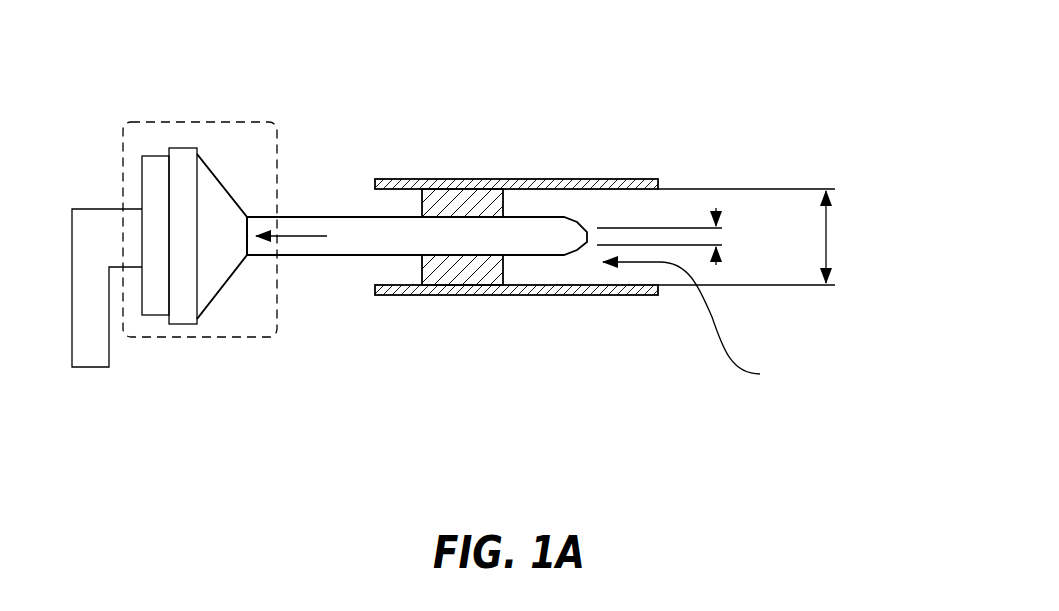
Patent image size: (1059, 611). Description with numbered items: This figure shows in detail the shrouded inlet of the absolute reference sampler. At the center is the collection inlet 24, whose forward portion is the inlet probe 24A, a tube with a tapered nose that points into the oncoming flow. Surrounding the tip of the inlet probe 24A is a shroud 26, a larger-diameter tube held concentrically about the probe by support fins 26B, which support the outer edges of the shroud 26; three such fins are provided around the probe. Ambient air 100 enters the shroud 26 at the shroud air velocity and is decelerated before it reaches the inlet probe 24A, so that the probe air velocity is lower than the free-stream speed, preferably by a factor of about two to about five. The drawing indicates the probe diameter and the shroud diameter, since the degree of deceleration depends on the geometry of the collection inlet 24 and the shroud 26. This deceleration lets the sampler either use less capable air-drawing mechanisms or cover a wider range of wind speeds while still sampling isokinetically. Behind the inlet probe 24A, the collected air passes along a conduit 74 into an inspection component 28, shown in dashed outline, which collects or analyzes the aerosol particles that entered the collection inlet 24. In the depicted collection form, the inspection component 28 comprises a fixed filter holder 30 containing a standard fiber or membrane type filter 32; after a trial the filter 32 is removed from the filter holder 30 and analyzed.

The collection inlet 24 is at (520, 122).
The inlet probe 24A is at (311, 265).
The shroud 26 is at (571, 304).
The support fins 26B is at (452, 273).
The inspection component 28 is at (292, 150).
The filter holder 30 is at (134, 199).
The filter 32 is at (173, 137).
The conduit 74 is at (109, 342).
The ambient air 100 is at (852, 204).